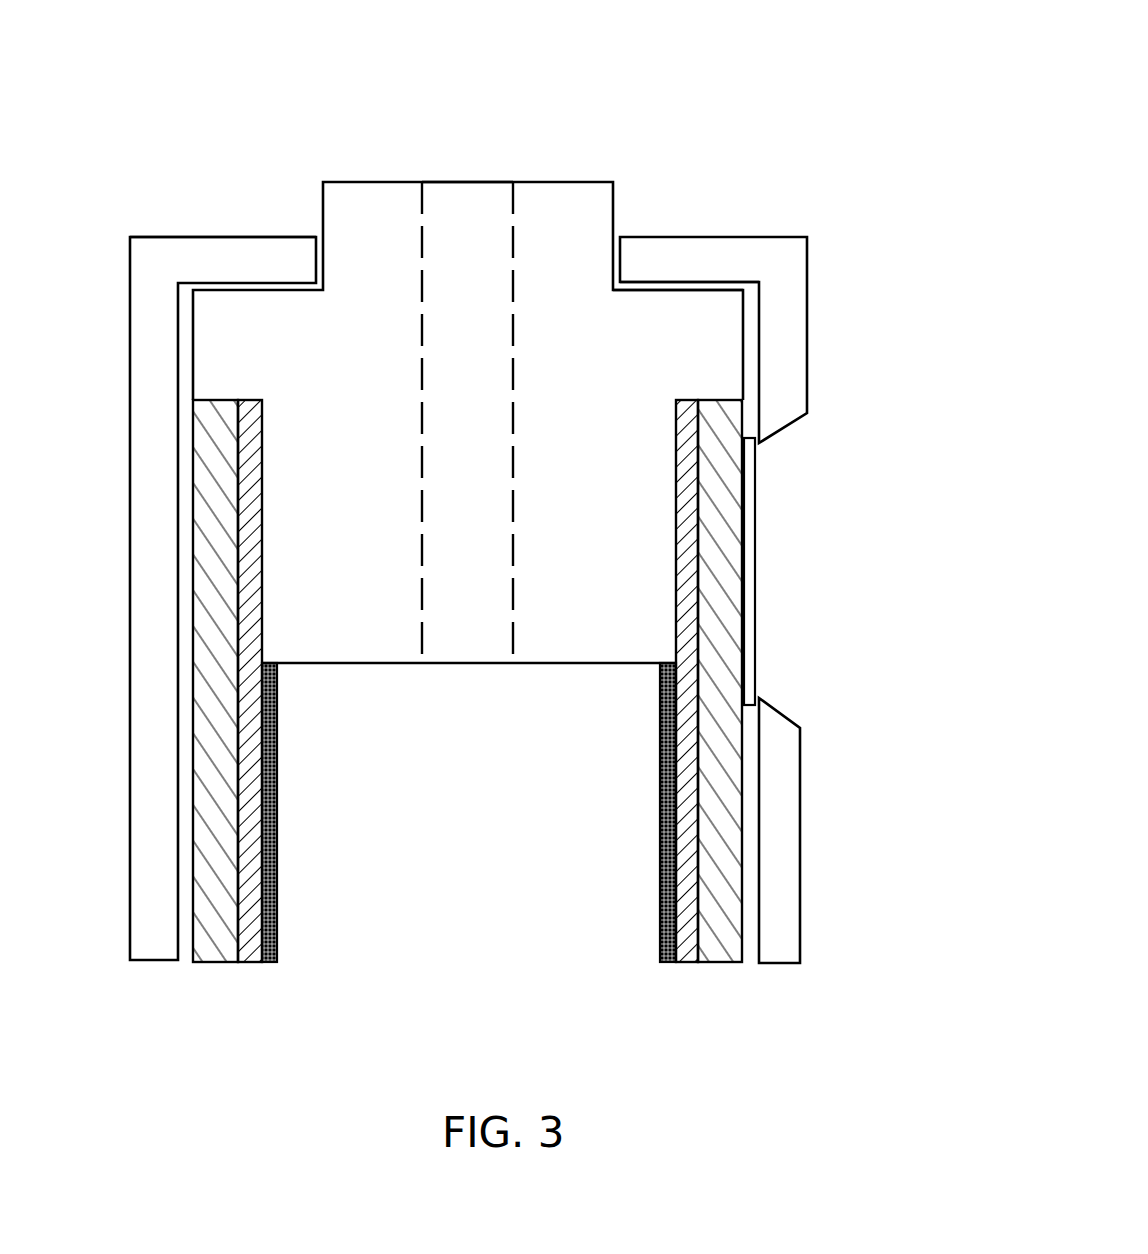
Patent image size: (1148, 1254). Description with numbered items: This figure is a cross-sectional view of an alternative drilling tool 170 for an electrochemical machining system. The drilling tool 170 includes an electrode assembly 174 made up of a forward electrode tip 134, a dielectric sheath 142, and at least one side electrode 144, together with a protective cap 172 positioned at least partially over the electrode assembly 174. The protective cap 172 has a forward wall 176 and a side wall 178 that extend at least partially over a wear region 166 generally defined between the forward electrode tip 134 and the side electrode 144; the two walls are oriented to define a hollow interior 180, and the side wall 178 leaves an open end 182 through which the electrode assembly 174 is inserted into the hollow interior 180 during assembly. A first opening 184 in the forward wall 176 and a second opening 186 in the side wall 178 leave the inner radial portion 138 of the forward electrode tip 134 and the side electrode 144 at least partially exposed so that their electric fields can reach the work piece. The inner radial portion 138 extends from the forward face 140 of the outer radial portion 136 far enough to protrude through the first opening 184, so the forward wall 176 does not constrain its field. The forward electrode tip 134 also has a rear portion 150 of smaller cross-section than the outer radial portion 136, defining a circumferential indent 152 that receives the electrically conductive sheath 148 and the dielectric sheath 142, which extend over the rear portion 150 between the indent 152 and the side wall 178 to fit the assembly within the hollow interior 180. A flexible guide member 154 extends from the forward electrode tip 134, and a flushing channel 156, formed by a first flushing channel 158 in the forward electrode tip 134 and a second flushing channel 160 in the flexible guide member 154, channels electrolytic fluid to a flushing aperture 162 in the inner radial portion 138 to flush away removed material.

The forward electrode tip 134 is at (642, 163).
The outer radial portion 136 is at (659, 302).
The inner radial portion 138 is at (552, 197).
The forward face 140 is at (725, 282).
The dielectric sheath 142 is at (208, 962).
The side electrode 144 is at (755, 650).
The electrically conductive sheath 148 is at (688, 962).
The rear portion 150 is at (558, 663).
The circumferential indent 152 is at (677, 504).
The flexible guide member 154 is at (268, 962).
The flushing channel 156 is at (360, 912).
The first flushing channel 158 is at (487, 413).
The second flushing channel 160 is at (494, 802).
The flushing aperture 162 is at (470, 182).
The wear region 166 is at (847, 264).
The drilling tool 170 is at (746, 73).
The protective cap 172 is at (130, 415).
The electrode assembly 174 is at (288, 169).
The forward wall 176 is at (217, 237).
The side wall 178 is at (800, 843).
The hollow interior 180 is at (366, 729).
The open end 182 is at (415, 967).
The first opening 184 is at (311, 211).
The second opening 186 is at (815, 455).